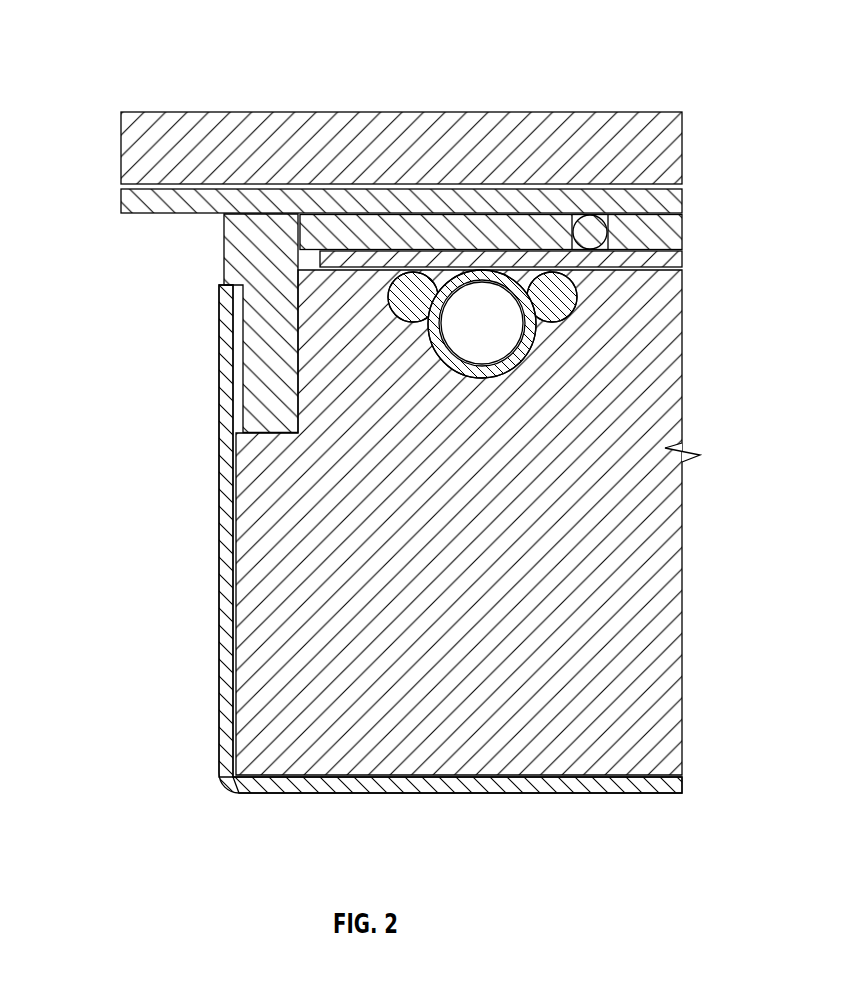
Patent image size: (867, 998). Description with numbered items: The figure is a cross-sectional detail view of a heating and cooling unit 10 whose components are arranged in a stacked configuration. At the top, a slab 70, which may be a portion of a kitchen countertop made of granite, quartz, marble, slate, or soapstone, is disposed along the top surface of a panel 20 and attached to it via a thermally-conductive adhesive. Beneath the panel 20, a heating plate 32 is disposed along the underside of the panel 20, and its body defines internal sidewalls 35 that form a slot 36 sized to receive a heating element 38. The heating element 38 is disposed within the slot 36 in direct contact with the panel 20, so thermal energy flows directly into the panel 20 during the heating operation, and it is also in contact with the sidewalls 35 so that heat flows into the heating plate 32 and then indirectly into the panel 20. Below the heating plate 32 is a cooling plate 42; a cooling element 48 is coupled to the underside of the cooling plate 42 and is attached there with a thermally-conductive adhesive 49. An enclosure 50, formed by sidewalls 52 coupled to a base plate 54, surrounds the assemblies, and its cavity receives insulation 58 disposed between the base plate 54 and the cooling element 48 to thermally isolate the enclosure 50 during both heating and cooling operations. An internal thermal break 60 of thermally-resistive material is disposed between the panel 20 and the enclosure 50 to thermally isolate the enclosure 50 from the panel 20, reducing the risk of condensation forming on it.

The heating and cooling unit 10 is at (103, 46).
The panel 20 is at (137, 208).
The heating plate 32 is at (677, 232).
The sidewalls 35 is at (573, 233).
The slot 36 is at (604, 204).
The heating element 38 is at (592, 233).
The cooling plate 42 is at (677, 265).
The cooling element 48 is at (530, 333).
The thermally-conductive adhesive 49 is at (562, 295).
The enclosure 50 is at (209, 809).
The sidewalls 52 is at (228, 673).
The base plate 54 is at (437, 783).
The insulation 58 is at (610, 587).
The internal thermal break 60 is at (243, 263).
The slab 70 is at (165, 132).